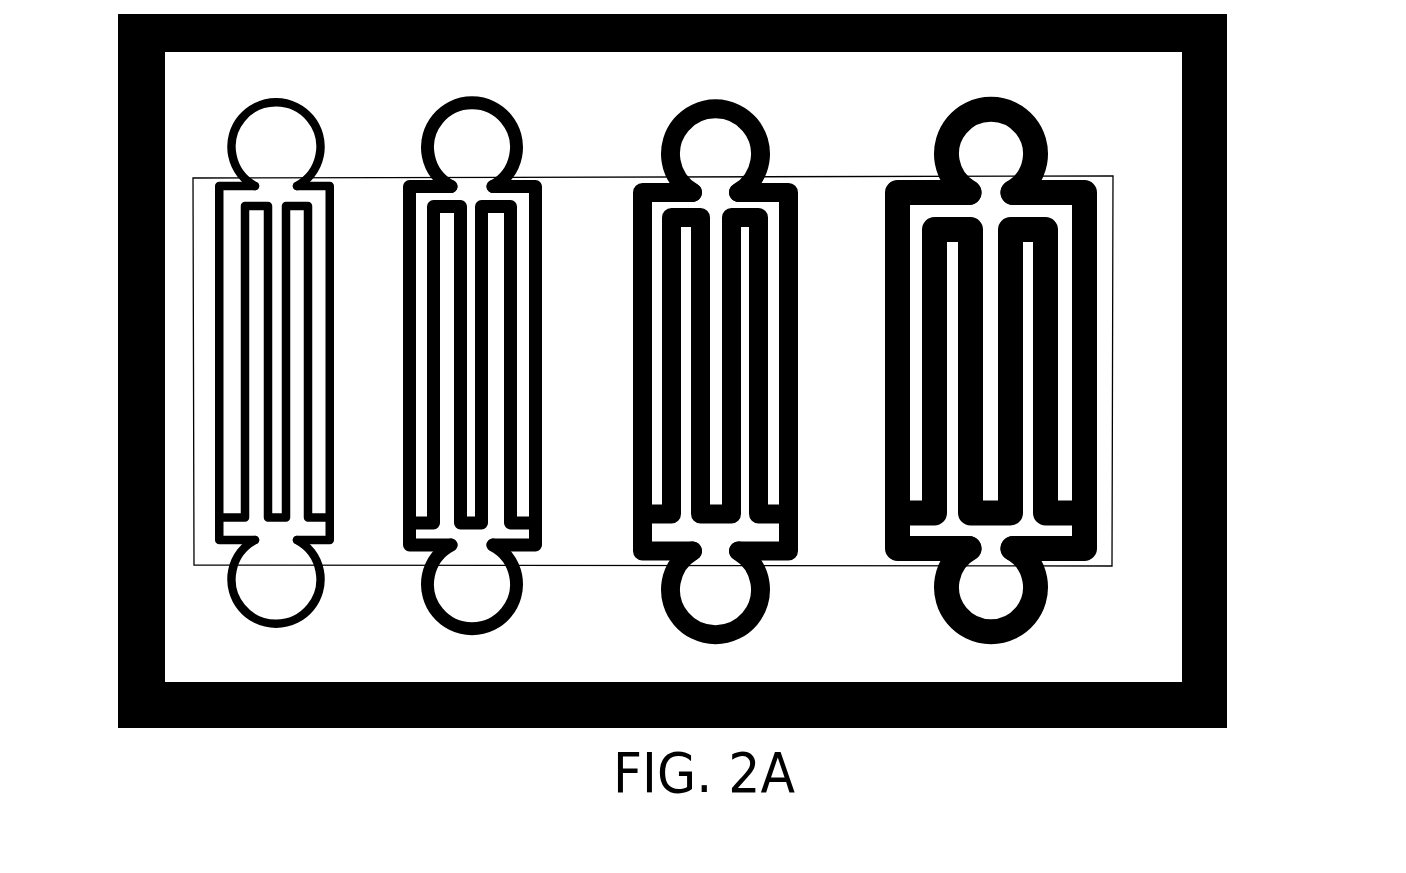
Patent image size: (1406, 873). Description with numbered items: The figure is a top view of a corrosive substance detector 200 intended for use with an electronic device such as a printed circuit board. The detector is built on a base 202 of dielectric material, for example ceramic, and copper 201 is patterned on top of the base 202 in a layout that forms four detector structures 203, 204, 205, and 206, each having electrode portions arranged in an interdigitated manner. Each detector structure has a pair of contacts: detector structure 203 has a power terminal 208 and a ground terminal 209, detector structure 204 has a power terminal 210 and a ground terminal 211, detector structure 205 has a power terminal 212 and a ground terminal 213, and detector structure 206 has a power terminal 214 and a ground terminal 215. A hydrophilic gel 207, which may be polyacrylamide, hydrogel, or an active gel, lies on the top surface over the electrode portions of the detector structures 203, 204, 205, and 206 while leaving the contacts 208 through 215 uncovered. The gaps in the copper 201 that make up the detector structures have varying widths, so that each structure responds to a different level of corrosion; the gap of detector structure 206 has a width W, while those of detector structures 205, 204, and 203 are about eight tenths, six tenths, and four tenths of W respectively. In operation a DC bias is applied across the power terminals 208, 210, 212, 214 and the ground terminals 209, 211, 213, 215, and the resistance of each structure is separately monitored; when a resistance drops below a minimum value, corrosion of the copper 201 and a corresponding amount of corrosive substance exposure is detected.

The corrosive substance detector 200 is at (711, 371).
The copper 201 is at (1137, 651).
The base 202 is at (118, 366).
The detector structure 203 is at (334, 270).
The detector structure 204 is at (541, 268).
The detector structure 205 is at (798, 300).
The detector structure 206 is at (1095, 307).
The hydrophilic gel 207 is at (604, 392).
The power terminal 208 is at (260, 156).
The ground terminal 209 is at (260, 604).
The power terminal 210 is at (456, 156).
The ground terminal 211 is at (457, 596).
The power terminal 212 is at (699, 164).
The ground terminal 213 is at (700, 606).
The power terminal 214 is at (974, 162).
The ground terminal 215 is at (975, 604).